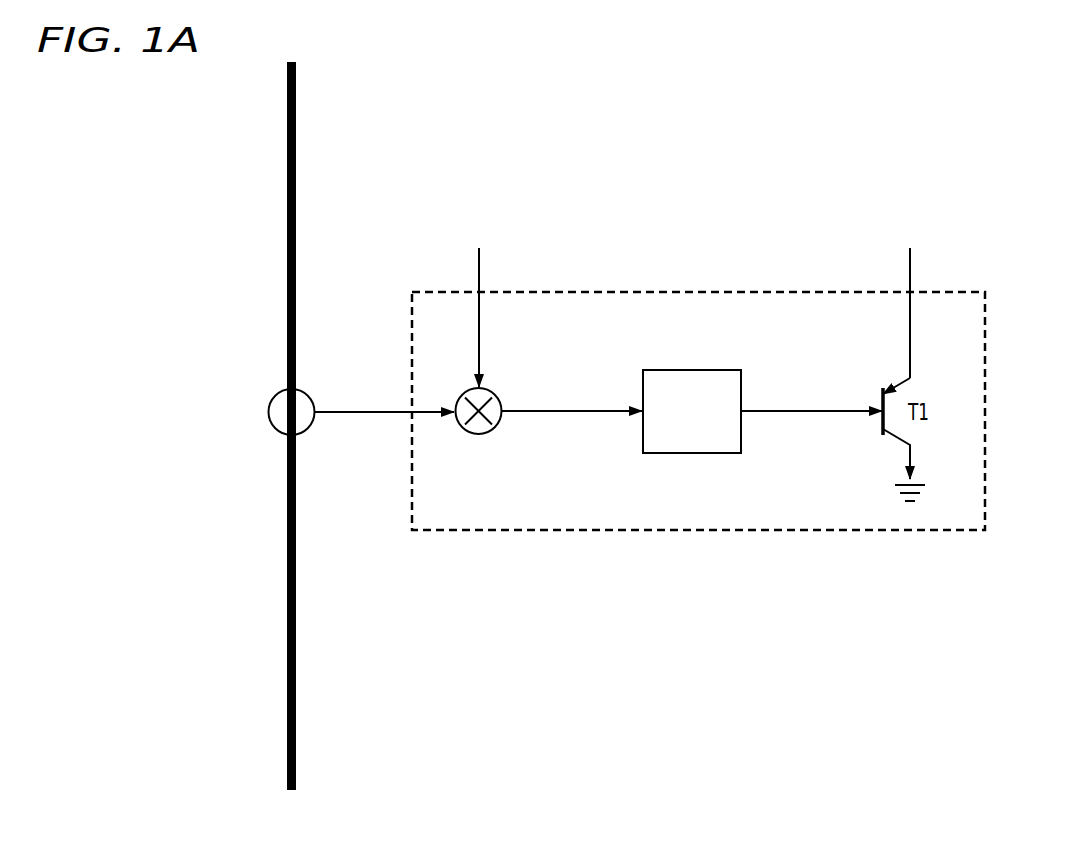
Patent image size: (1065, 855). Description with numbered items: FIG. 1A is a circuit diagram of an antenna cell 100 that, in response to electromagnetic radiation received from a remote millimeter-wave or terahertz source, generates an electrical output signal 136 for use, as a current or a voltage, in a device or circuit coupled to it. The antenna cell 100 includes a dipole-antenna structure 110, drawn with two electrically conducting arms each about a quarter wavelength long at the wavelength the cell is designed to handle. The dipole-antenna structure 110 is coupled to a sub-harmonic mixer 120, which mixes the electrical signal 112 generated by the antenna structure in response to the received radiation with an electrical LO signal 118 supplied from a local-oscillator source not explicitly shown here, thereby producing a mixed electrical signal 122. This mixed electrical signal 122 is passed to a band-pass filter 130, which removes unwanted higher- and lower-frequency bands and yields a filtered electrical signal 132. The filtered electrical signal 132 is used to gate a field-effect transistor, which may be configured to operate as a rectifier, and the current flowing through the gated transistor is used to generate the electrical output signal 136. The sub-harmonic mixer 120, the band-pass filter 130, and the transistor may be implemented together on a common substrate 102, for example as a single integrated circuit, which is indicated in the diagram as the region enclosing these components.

The antenna cell 100 is at (140, 107).
The common substrate 102 is at (986, 326).
The dipole-antenna structure 110 is at (250, 724).
The electrical signal 112 is at (360, 413).
The electrical LO signal 118 is at (480, 275).
The sub-harmonic mixer 120 is at (478, 436).
The mixed electrical signal 122 is at (565, 413).
The band-pass filter 130 is at (688, 369).
The filtered electrical signal 132 is at (810, 413).
The electrical output signal 136 is at (911, 275).